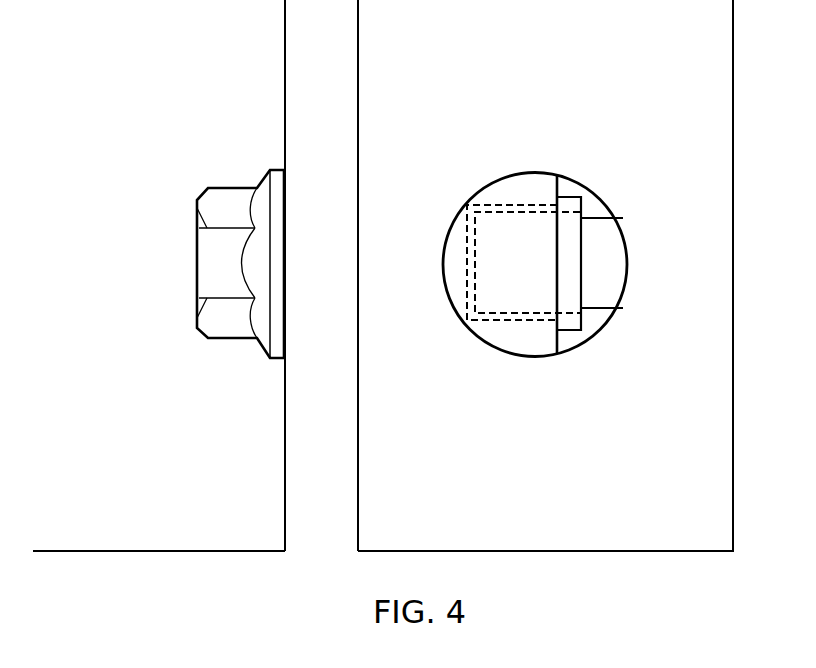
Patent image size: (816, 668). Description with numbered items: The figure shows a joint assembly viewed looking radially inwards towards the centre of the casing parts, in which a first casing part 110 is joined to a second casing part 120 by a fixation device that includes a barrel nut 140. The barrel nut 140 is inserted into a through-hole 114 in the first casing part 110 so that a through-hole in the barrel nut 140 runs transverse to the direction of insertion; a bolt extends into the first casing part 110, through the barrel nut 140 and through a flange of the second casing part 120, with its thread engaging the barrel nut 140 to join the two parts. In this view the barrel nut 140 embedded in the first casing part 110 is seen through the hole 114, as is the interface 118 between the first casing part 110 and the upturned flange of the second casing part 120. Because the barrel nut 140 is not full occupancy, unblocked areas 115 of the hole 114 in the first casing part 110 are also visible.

The first casing part 110 is at (535, 496).
The second casing part 120 is at (118, 489).
The interface 118 is at (358, 47).
The barrel nut 140 is at (527, 205).
The through-hole 114 is at (533, 357).
The unblocked areas 115 is at (593, 213).